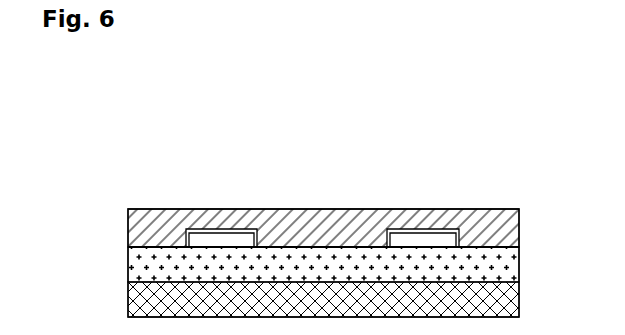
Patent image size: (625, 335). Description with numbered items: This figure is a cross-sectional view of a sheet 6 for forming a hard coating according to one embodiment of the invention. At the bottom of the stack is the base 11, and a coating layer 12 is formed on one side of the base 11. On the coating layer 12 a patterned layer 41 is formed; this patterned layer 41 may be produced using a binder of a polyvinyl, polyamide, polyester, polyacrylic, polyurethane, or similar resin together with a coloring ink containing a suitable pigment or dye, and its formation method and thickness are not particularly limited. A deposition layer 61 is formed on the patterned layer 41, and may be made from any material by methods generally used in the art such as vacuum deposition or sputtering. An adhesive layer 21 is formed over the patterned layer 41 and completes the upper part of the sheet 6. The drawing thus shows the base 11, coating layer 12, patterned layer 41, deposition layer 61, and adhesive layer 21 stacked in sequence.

The sheet for forming a hard coating 6 is at (346, 188).
The base 11 is at (519, 302).
The coating layer 12 is at (519, 267).
The adhesive layer 21 is at (519, 223).
The patterned layer 41 is at (428, 242).
The deposition layer 61 is at (128, 247).